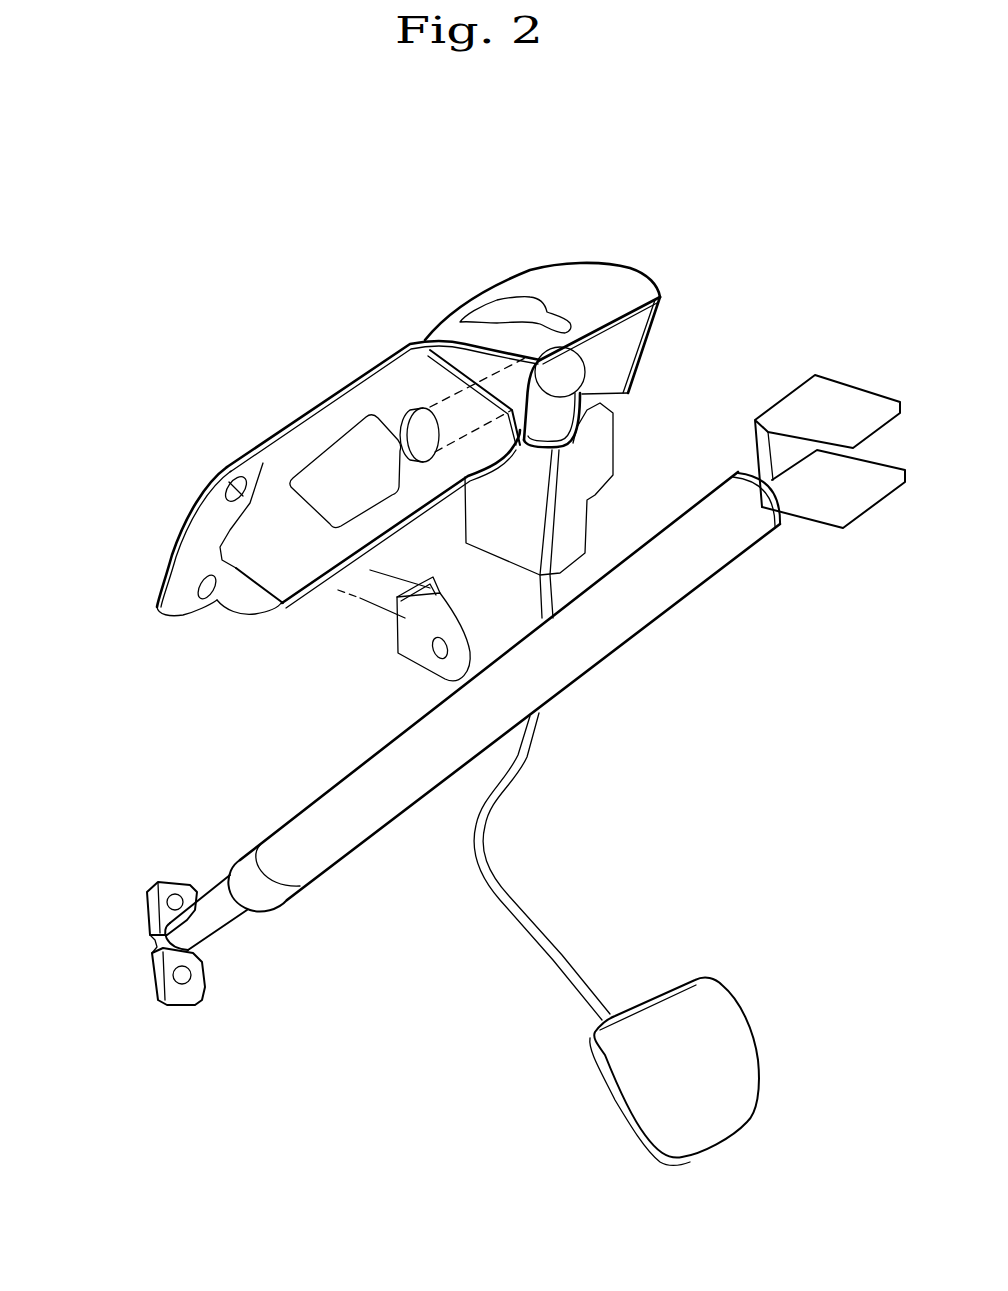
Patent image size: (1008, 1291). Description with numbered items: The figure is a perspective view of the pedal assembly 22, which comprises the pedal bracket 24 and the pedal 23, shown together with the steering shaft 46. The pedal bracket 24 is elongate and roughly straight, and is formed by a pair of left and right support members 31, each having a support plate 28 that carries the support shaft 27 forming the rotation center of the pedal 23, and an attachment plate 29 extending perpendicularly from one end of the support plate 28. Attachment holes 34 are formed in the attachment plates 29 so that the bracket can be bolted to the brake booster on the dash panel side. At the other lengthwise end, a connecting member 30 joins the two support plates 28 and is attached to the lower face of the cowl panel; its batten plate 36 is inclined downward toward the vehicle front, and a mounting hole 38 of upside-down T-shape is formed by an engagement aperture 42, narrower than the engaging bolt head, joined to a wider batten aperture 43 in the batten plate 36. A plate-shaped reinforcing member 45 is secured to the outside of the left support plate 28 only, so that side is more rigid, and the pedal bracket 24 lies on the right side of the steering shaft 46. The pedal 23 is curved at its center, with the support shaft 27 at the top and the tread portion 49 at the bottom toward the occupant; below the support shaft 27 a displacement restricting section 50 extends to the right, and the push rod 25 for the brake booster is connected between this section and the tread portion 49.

The pedal assembly 22 is at (400, 258).
The pedal 23 is at (580, 918).
The pedal bracket 24 is at (628, 238).
The push rod 25 is at (617, 283).
The support shaft 27 is at (630, 383).
The support plate 28 is at (400, 385).
The attachment plate 29 is at (200, 543).
The connecting member 30 is at (527, 233).
The support member 31 is at (200, 445).
The attachment hole 34 is at (243, 510).
The batten plate 36 is at (463, 308).
The mounting hole 38 is at (548, 286).
The engagement aperture 42 is at (637, 335).
The batten aperture 43 is at (527, 297).
The reinforcing member 45 is at (347, 458).
The steering shaft 46 is at (610, 630).
The tread portion 49 is at (710, 1037).
The displacement restricting section 50 is at (620, 450).